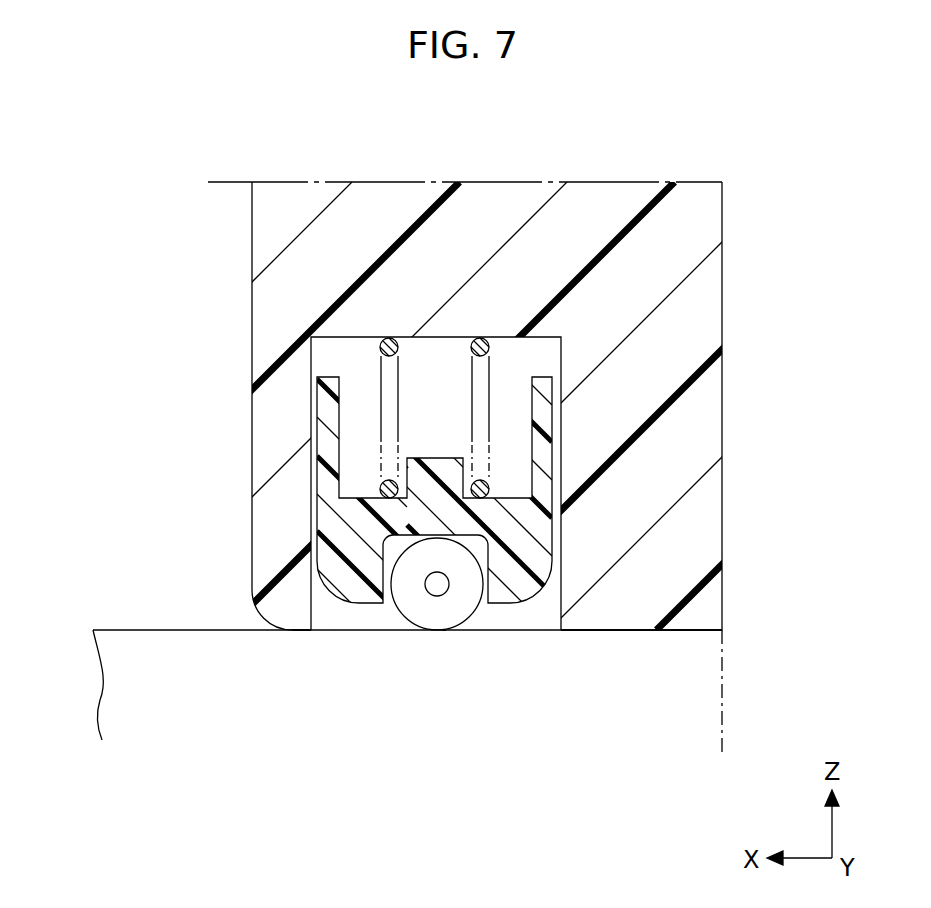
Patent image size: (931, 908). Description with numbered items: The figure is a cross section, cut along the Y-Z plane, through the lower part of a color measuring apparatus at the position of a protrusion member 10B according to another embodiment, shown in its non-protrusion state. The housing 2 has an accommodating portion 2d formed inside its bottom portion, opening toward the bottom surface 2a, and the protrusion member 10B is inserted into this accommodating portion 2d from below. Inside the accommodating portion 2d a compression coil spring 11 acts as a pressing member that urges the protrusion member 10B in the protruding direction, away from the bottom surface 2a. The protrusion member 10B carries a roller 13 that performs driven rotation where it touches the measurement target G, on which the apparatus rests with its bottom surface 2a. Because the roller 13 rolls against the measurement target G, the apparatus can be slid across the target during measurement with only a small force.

The housing 2 is at (252, 248).
The accommodating portion 2d is at (557, 365).
The bottom surface 2a is at (675, 632).
The measurement target G is at (128, 628).
The protrusion member 10B is at (523, 597).
The compression coil spring 11 is at (380, 374).
The roller 13 is at (455, 613).